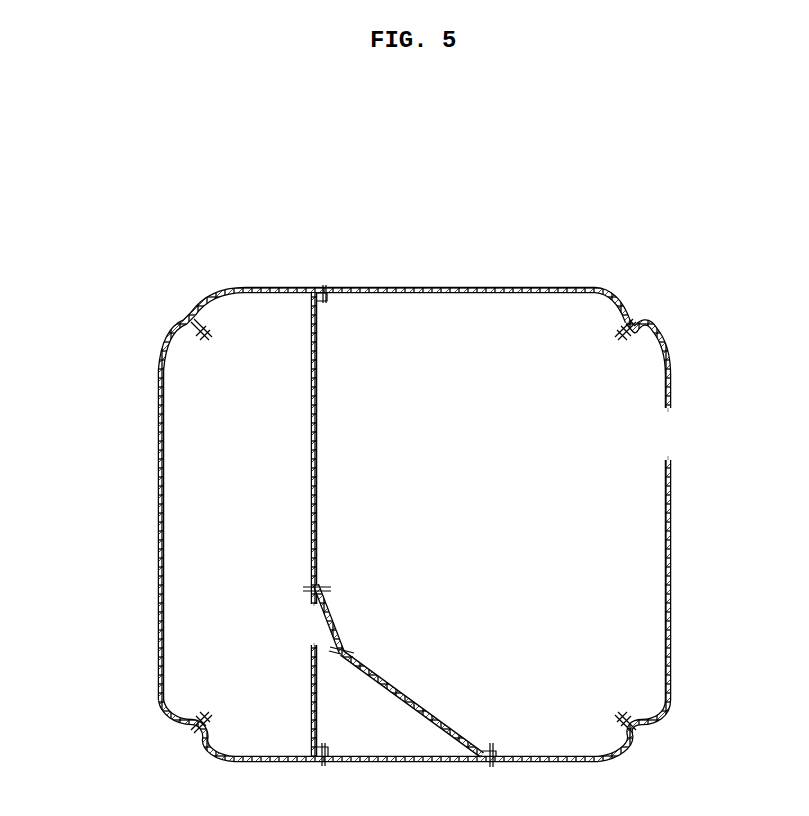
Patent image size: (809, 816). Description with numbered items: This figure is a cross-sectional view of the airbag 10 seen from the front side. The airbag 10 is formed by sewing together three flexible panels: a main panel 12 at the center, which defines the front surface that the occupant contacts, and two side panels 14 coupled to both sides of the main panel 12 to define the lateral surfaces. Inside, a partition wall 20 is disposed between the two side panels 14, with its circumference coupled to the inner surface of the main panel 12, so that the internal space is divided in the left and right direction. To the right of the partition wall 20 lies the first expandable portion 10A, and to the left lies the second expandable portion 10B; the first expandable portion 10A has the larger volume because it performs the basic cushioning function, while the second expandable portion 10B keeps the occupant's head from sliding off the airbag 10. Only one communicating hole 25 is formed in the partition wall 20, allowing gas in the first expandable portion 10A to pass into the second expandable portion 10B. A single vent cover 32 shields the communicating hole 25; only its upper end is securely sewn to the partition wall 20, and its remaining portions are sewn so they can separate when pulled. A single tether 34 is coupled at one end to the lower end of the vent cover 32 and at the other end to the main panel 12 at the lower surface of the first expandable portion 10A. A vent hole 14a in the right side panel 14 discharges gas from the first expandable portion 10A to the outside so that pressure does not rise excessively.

The airbag 10 is at (422, 482).
The first expandable portion 10A is at (634, 608).
The second expandable portion 10B is at (206, 496).
The main panel 12 is at (385, 287).
The side panel 14 is at (158, 425).
The vent hole 14a is at (669, 421).
The partition wall 20 is at (306, 340).
The communicating hole 25 is at (309, 642).
The vent cover 32 is at (336, 622).
The tether 34 is at (444, 730).